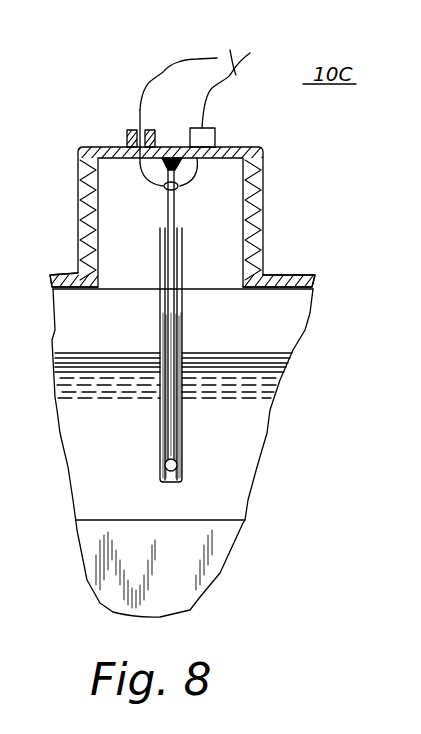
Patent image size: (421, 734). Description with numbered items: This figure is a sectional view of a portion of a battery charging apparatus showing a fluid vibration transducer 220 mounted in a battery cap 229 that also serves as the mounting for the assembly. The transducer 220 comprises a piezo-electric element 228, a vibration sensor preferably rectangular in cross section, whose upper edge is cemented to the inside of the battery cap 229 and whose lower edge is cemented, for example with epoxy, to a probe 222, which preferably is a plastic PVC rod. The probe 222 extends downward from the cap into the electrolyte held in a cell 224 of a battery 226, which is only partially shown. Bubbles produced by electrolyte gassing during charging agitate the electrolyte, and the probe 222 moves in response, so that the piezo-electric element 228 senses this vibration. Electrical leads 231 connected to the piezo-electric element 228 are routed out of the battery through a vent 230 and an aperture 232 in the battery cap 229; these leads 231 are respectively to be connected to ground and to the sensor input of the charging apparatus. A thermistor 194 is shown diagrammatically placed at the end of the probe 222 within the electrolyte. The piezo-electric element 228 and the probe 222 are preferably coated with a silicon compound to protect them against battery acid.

The thermistor 194 is at (177, 468).
The fluid vibration transducer 220 is at (184, 247).
The probe 222 is at (173, 415).
The cell 224 is at (128, 436).
The battery 226 is at (287, 277).
The piezo-electric element 228 is at (177, 207).
The battery cap 229 is at (255, 173).
The vent 230 is at (213, 135).
The electrical leads 231 is at (195, 77).
The aperture 232 is at (127, 130).